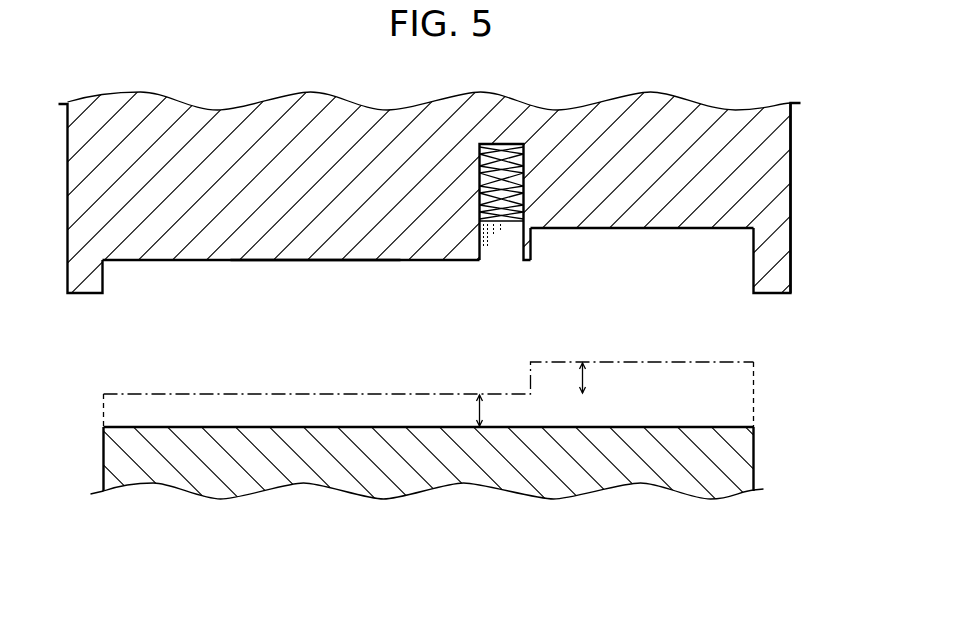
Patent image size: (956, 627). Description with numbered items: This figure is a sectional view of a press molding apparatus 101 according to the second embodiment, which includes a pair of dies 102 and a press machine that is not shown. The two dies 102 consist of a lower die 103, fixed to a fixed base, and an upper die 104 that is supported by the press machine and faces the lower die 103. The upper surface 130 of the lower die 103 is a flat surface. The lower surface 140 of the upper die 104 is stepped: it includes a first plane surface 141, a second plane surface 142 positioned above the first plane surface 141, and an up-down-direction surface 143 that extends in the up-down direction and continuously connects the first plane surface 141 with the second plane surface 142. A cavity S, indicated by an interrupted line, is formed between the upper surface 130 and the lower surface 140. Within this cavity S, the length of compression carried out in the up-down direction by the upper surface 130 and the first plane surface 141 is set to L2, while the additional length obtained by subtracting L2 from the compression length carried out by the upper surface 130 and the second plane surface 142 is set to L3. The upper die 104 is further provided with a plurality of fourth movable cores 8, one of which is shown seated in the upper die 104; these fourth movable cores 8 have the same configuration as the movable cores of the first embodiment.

The press molding apparatus 101 is at (792, 206).
The die 102 is at (478, 293).
The lower die 103 is at (520, 469).
The upper die 104 is at (270, 149).
The fourth movable core 8 is at (500, 242).
The upper surface 130 is at (287, 426).
The lower surface 140 is at (216, 263).
The first plane surface 141 is at (257, 259).
The second plane surface 142 is at (646, 227).
The up-down-direction surface 143 is at (532, 243).
The cavity S is at (288, 393).
The length of compression L2 is at (501, 411).
The length L3 is at (603, 379).